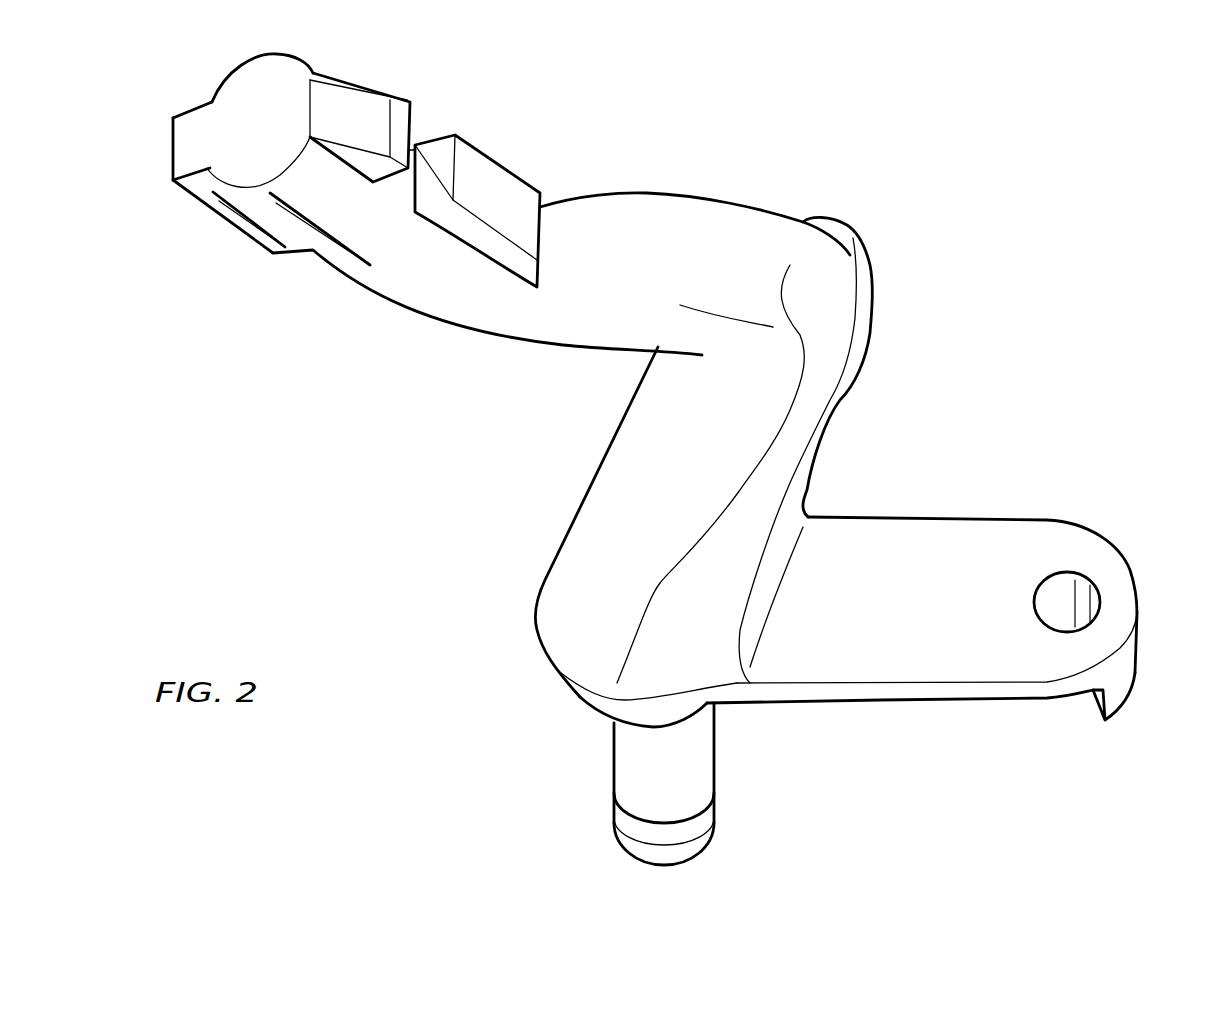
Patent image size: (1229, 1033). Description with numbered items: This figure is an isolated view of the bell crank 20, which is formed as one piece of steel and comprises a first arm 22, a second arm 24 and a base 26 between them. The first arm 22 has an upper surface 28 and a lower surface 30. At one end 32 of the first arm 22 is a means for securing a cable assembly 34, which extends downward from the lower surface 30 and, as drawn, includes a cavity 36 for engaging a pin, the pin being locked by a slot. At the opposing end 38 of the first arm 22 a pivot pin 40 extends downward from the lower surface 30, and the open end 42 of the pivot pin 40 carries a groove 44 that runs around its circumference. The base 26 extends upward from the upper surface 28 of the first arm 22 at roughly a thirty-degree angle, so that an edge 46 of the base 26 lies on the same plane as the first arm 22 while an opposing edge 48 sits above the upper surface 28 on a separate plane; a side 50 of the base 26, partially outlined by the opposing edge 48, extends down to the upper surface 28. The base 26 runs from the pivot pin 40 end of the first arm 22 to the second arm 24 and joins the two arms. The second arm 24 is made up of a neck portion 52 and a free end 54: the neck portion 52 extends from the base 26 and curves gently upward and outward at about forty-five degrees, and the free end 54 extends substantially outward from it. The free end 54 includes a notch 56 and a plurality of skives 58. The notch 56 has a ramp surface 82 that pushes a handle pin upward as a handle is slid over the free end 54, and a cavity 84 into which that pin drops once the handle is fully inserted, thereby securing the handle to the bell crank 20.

The bell crank 20 is at (1073, 153).
The first arm 22 is at (980, 512).
The second arm 24 is at (358, 303).
The base 26 is at (704, 450).
The upper surface 28 is at (932, 624).
The lower surface 30 is at (923, 702).
The one end 32 is at (1137, 597).
The means for securing a cable assembly 34 is at (1137, 670).
The cavity 36 is at (1077, 573).
The opposing end 38 is at (578, 703).
The pivot pin 40 is at (715, 760).
The open end 42 is at (678, 867).
The groove 44 is at (703, 815).
The edge 46 is at (580, 490).
The opposing edge 48 is at (822, 383).
The side 50 is at (782, 538).
The neck portion 52 is at (680, 238).
The free end 54 is at (232, 75).
The notch 56 is at (440, 128).
The skives 58 is at (252, 227).
The ramp surface 82 is at (358, 130).
The cavity 84 is at (405, 187).